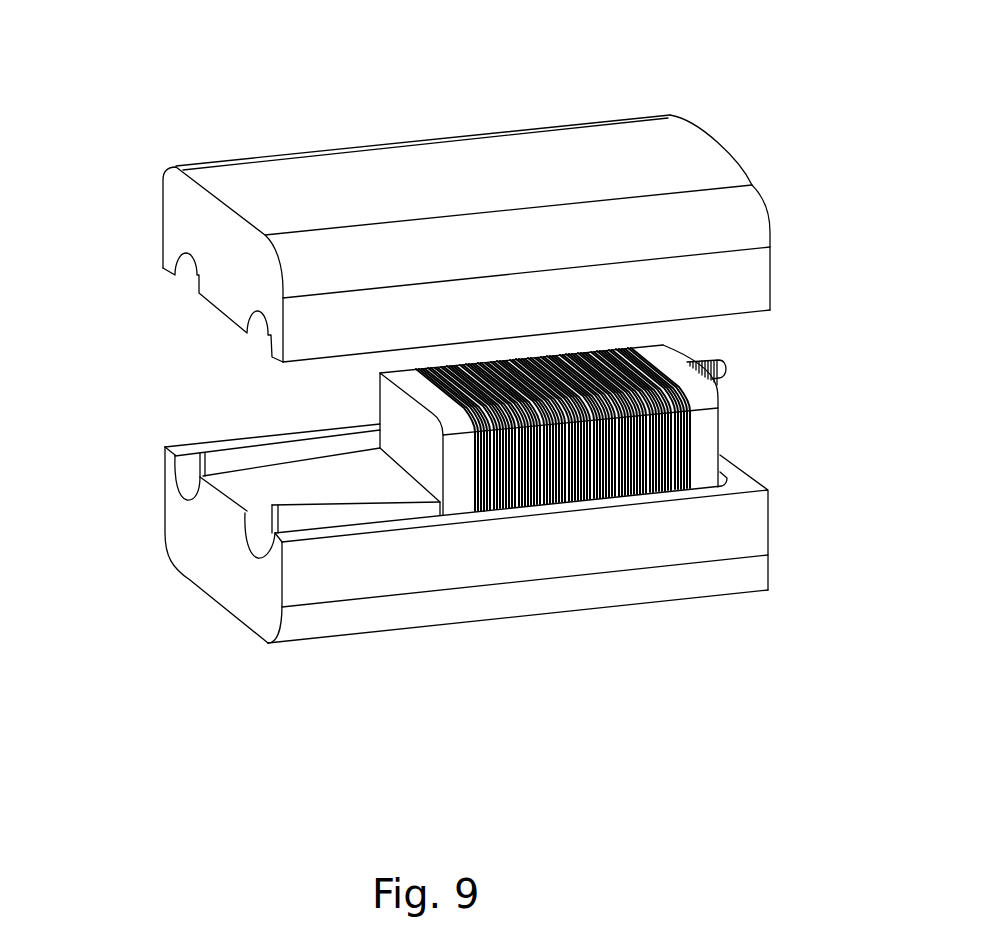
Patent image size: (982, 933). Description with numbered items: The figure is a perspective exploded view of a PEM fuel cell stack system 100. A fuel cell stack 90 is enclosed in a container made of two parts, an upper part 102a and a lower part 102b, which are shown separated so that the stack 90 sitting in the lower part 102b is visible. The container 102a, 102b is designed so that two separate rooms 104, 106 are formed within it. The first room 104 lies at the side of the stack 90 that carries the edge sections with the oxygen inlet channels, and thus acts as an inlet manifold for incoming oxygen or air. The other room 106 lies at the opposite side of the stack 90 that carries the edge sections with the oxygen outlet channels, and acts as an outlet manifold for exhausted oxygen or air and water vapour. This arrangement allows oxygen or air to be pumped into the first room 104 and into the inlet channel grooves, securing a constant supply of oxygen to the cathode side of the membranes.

The fuel cell stack system 100 is at (411, 98).
The container 102a is at (315, 182).
The container 102b is at (353, 610).
The PEM fuel cell stack 90 is at (707, 428).
The first room 104 is at (303, 518).
The other room 106 is at (220, 465).